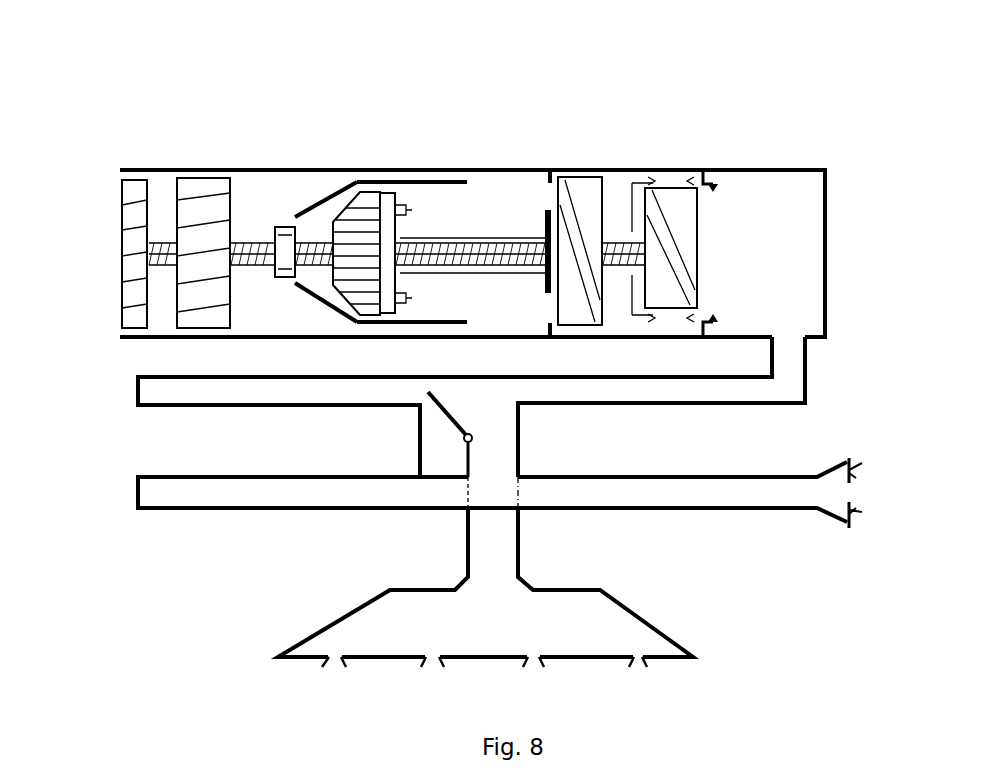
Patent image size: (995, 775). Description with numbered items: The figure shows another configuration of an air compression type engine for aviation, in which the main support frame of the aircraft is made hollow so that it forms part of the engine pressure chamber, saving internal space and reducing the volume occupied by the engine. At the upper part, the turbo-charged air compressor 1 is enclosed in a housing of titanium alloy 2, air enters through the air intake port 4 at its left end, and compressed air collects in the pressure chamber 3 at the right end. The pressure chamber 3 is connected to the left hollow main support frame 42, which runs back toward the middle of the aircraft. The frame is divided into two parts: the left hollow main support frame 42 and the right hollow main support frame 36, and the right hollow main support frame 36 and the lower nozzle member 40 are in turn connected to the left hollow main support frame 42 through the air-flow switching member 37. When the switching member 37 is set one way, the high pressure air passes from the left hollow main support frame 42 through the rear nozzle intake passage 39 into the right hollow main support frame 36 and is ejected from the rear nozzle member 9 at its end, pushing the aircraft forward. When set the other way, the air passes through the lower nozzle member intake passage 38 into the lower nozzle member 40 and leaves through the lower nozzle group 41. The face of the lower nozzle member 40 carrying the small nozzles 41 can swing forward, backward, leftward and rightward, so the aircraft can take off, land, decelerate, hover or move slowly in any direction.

The turbo-charged air compressor 1 is at (407, 165).
The housing of titanium alloy 2 is at (748, 162).
The pressure chamber 3 is at (747, 245).
The air intake port 4 is at (138, 222).
The rear nozzle member 9 is at (836, 497).
The right hollow main bracket 36 is at (233, 492).
The air-flow switching member 37 is at (445, 413).
The intake passage of a lower nozzle member 38 is at (495, 443).
The intake passage of a rear nozzle 39 is at (443, 442).
The lower nozzle member 40 is at (390, 635).
The small nozzle of the lower nozzle member 41 is at (640, 655).
The left hollow main bracket 42 is at (167, 390).